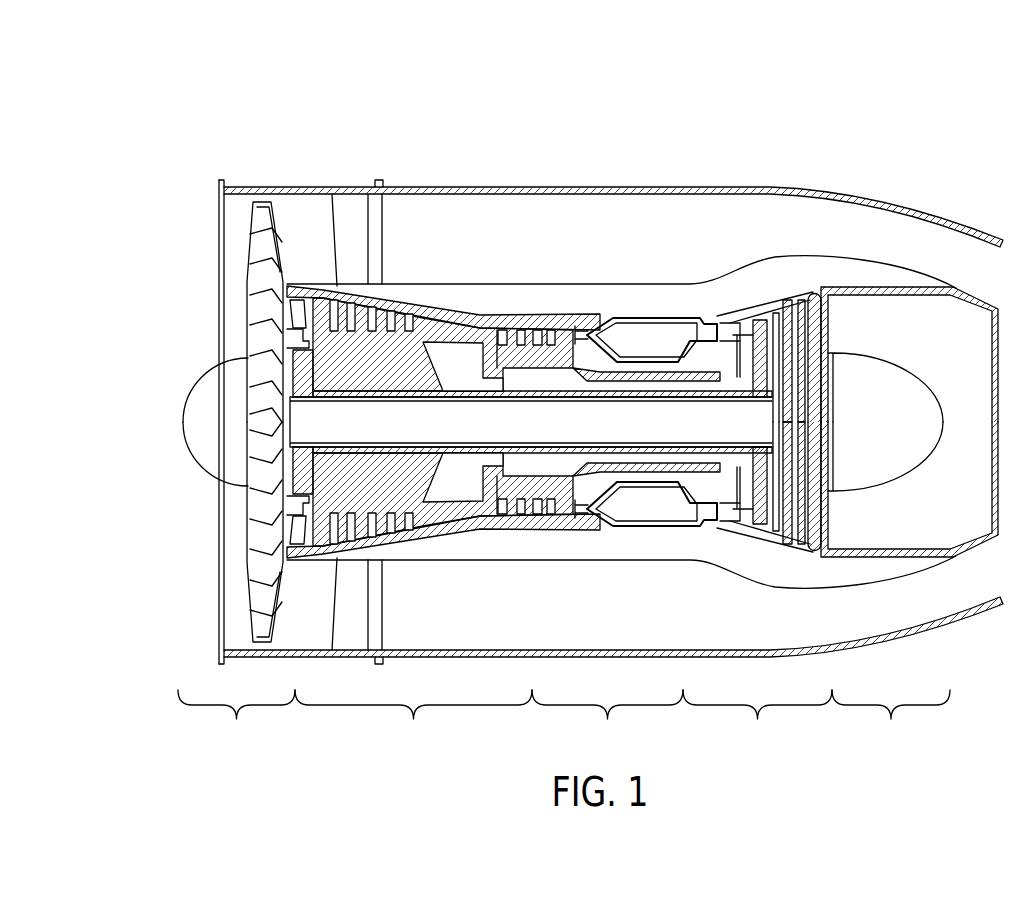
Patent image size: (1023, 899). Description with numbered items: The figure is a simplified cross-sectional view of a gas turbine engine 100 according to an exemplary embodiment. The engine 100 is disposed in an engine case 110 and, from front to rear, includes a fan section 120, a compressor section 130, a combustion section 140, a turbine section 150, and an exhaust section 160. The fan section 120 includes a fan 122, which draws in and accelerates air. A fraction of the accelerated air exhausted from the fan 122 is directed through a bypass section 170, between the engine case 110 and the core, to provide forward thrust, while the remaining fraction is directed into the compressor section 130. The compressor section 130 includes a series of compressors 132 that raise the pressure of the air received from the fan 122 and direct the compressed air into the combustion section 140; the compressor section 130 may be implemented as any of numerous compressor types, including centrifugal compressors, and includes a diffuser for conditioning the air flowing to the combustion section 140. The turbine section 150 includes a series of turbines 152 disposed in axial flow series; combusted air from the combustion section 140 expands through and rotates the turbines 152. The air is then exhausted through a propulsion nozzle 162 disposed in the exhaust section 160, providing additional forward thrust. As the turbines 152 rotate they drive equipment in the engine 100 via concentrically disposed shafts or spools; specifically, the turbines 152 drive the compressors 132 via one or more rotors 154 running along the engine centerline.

The gas turbine engine 100 is at (432, 93).
The engine case 110 is at (440, 186).
The fan section 120 is at (236, 720).
The fan 122 is at (247, 523).
The compressor section 130 is at (413, 720).
The compressors 132 is at (428, 540).
The combustion section 140 is at (636, 534).
The turbine section 150 is at (757, 542).
The turbines 152 is at (759, 543).
The rotors 154 is at (297, 416).
The exhaust section 160 is at (909, 518).
The propulsion nozzle 162 is at (917, 382).
The bypass section 170 is at (542, 212).